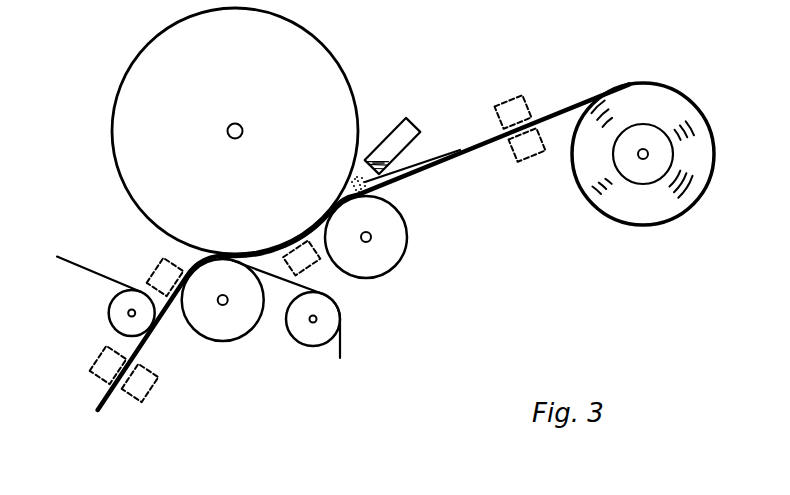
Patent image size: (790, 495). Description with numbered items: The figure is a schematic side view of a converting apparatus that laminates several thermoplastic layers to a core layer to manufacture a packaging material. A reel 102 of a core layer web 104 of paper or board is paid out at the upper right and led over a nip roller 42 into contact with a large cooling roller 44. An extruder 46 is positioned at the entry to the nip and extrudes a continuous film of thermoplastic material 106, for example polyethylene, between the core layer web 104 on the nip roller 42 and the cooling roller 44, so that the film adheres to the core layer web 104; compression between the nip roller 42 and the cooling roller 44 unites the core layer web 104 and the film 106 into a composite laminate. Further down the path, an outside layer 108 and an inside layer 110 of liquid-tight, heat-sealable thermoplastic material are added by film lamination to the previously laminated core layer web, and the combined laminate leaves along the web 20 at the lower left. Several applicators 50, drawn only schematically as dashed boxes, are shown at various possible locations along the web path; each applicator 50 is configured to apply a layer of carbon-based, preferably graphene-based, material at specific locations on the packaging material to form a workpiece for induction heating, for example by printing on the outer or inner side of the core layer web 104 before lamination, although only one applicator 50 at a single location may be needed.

The web 20 is at (106, 404).
The nip roller 42 is at (405, 243).
The cooling roller 44 is at (127, 108).
The extruder 46 is at (405, 116).
The applicator 50 is at (147, 280).
The reel 102 is at (622, 214).
The core layer web 104 is at (552, 112).
The film of thermoplastic material 106 is at (443, 156).
The outside layer 108 is at (342, 343).
The inside layer 110 is at (93, 270).